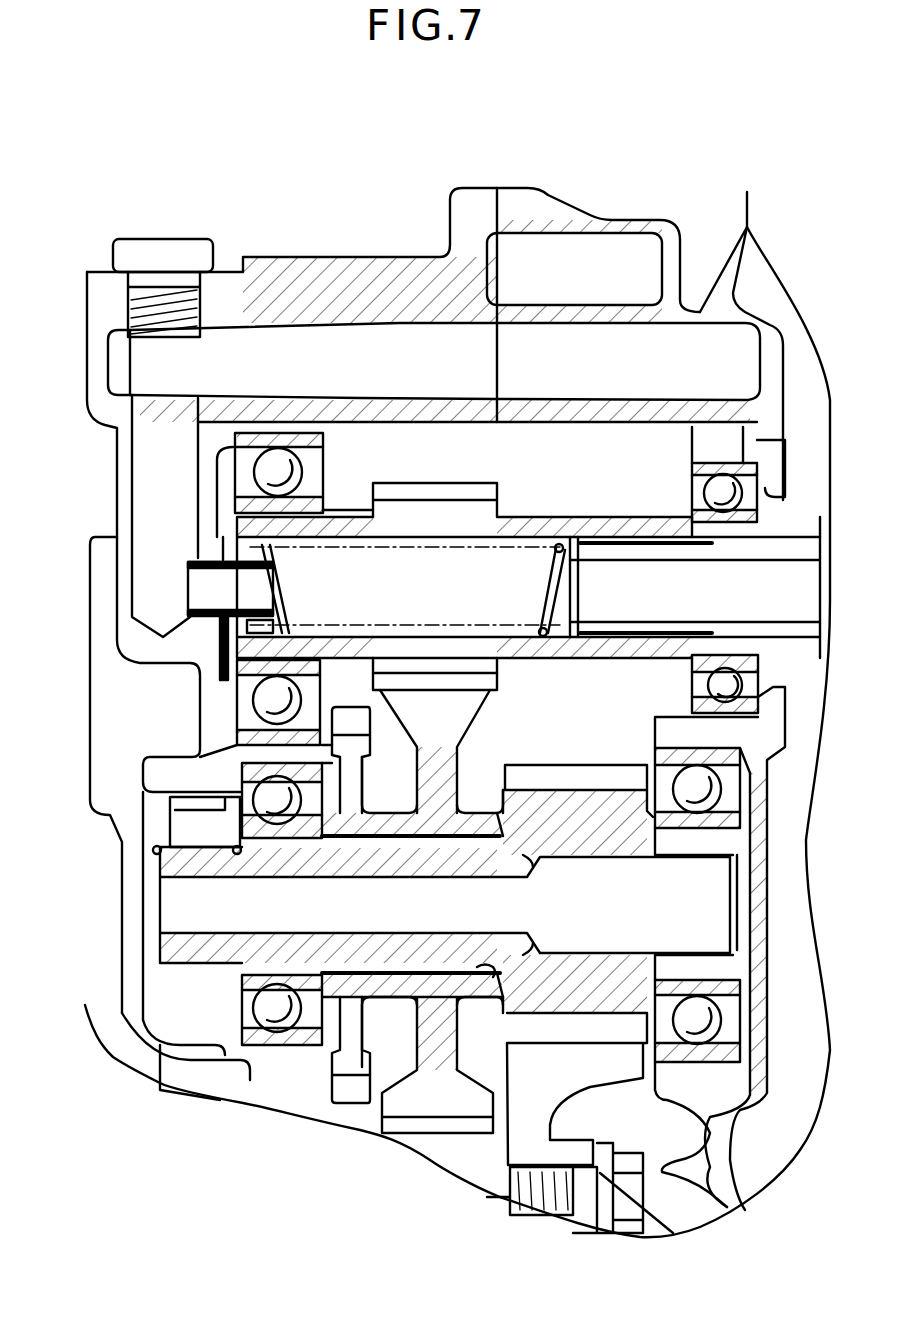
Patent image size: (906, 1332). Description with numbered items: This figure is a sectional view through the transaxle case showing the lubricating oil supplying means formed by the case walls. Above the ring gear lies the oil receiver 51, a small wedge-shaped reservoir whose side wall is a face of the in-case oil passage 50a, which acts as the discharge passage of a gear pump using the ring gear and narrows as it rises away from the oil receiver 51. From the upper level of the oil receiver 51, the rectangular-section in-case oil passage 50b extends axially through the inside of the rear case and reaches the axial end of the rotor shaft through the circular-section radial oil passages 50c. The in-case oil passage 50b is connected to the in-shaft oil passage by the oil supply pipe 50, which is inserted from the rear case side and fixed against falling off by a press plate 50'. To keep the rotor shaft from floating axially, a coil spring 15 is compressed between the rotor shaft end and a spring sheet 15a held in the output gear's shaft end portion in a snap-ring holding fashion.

The in-case oil passage 50a is at (577, 250).
The in-case oil passage 50b is at (447, 386).
The oil receiver 51 is at (642, 386).
The radial oil passages 50c is at (140, 450).
The oil supply pipe 50 is at (146, 597).
The press plate 50' is at (123, 676).
The coil spring 15 is at (417, 550).
The spring sheet 15a is at (290, 588).